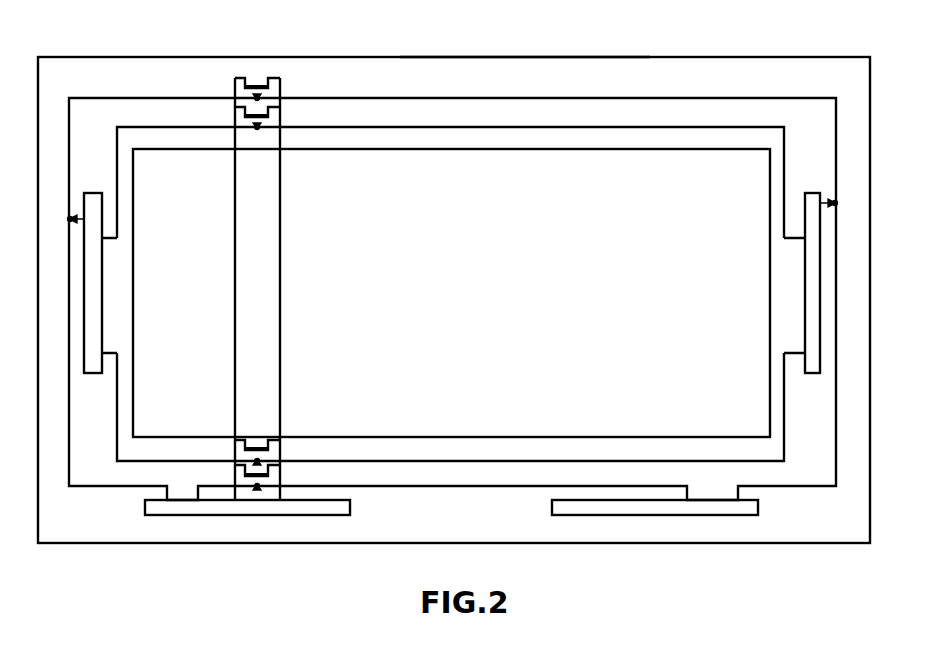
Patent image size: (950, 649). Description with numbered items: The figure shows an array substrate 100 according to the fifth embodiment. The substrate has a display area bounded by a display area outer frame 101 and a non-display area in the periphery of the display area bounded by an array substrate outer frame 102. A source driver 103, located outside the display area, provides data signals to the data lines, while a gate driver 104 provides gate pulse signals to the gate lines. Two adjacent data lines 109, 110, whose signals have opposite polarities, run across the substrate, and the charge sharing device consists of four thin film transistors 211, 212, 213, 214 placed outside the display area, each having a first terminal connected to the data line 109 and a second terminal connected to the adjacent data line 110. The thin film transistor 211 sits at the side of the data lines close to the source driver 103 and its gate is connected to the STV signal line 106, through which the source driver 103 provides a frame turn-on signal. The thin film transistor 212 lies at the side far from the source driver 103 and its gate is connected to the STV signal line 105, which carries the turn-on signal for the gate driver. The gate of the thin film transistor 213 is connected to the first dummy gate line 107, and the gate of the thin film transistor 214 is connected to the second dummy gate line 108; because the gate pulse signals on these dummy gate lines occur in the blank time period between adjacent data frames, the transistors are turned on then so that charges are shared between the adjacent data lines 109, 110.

The array substrate 100 is at (780, 68).
The display area outer frame 101 is at (505, 150).
The array substrate outer frame 102 is at (527, 58).
The source driver 103 is at (352, 512).
The gate driver 104 is at (92, 279).
The STV signal line 105 is at (710, 70).
The STV signal line 106 is at (608, 483).
The first dummy gate line 107 is at (700, 130).
The second dummy gate line 108 is at (703, 461).
The data line 109 is at (281, 340).
The data line 110 is at (235, 340).
The thin film transistor 211 is at (282, 472).
The thin film transistor 212 is at (233, 83).
The thin film transistor 213 is at (283, 120).
The thin film transistor 214 is at (282, 448).